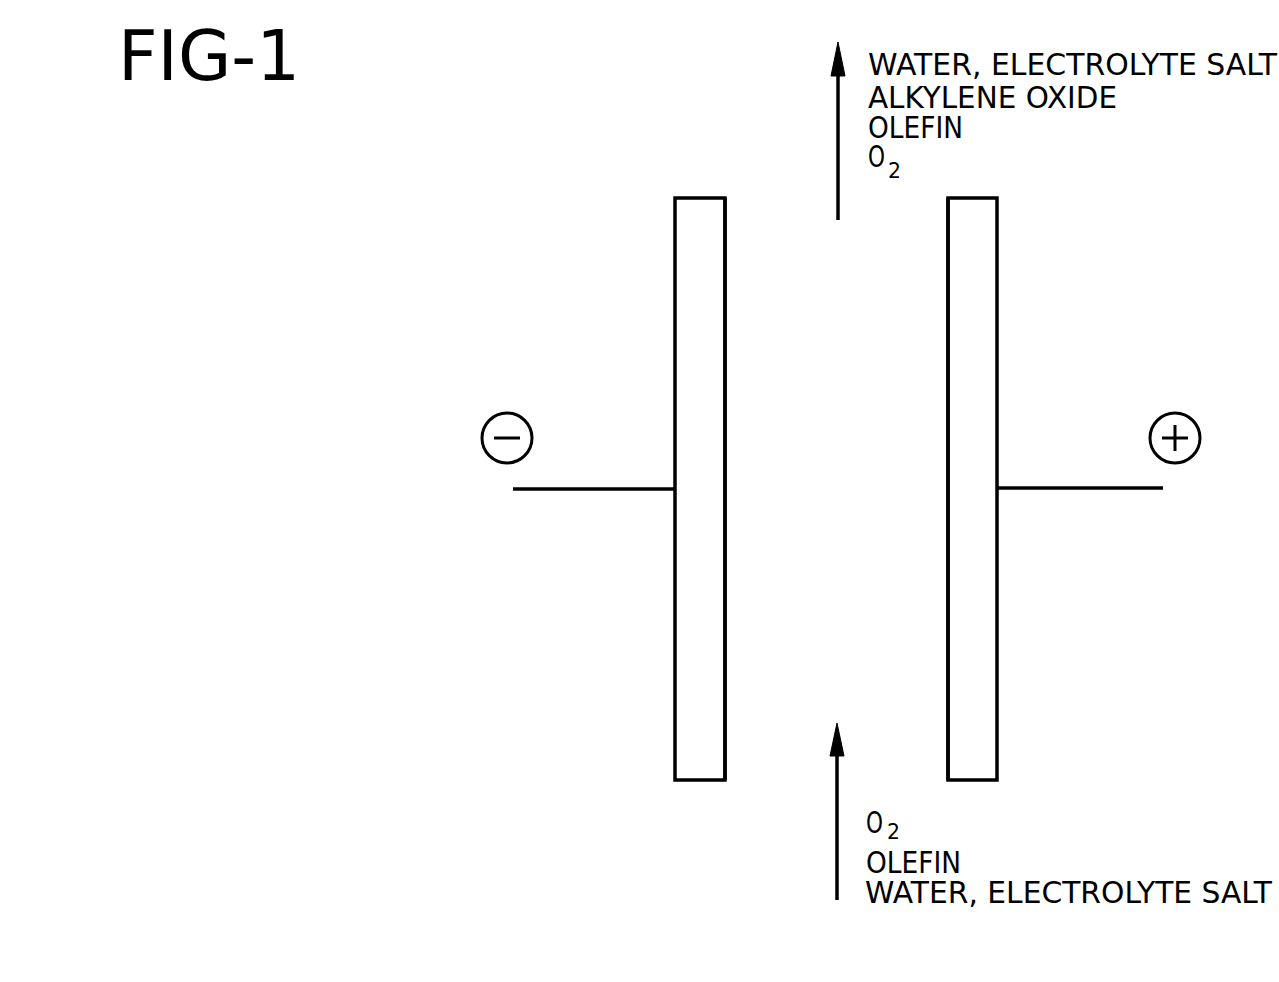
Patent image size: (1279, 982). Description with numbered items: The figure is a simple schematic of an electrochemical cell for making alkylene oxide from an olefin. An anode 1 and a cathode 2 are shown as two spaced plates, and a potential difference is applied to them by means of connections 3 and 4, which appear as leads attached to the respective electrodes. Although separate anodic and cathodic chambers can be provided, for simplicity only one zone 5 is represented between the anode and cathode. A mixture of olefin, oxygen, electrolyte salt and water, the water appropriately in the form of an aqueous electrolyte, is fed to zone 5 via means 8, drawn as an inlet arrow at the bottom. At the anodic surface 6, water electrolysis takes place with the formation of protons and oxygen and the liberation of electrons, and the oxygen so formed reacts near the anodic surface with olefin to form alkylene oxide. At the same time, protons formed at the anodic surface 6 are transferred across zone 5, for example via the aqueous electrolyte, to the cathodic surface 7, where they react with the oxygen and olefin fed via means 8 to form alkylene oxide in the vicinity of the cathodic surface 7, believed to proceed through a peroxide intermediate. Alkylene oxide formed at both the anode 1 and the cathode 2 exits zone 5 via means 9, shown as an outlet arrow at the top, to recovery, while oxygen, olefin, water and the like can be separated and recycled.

The anode 1 is at (998, 287).
The cathode 2 is at (675, 287).
The connection 3 is at (1122, 490).
The connection 4 is at (575, 489).
The zone 5 is at (797, 258).
The anodic surface 6 is at (947, 634).
The cathodic surface 7 is at (725, 574).
The means 8 is at (835, 877).
The means 9 is at (836, 128).